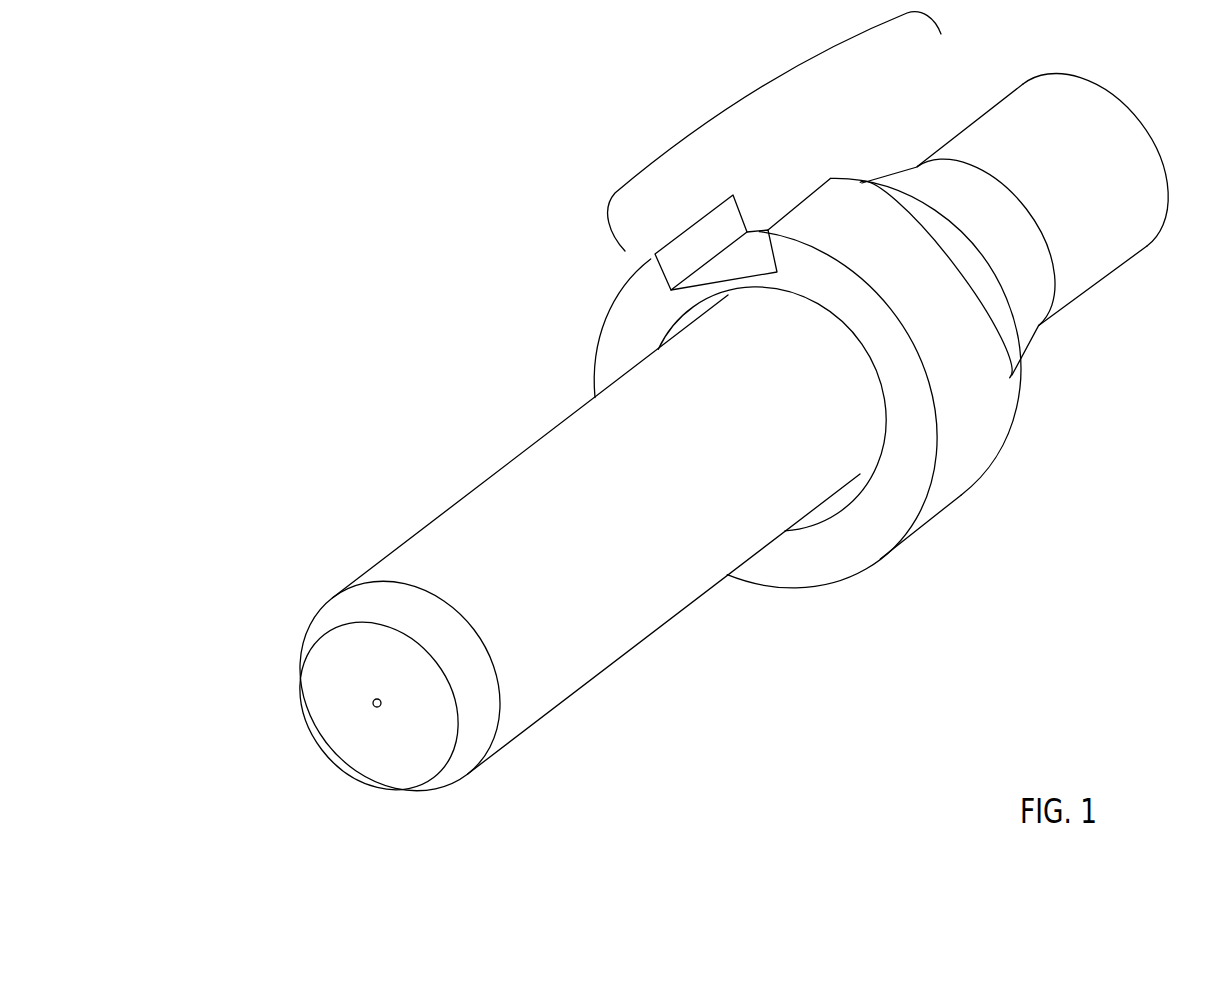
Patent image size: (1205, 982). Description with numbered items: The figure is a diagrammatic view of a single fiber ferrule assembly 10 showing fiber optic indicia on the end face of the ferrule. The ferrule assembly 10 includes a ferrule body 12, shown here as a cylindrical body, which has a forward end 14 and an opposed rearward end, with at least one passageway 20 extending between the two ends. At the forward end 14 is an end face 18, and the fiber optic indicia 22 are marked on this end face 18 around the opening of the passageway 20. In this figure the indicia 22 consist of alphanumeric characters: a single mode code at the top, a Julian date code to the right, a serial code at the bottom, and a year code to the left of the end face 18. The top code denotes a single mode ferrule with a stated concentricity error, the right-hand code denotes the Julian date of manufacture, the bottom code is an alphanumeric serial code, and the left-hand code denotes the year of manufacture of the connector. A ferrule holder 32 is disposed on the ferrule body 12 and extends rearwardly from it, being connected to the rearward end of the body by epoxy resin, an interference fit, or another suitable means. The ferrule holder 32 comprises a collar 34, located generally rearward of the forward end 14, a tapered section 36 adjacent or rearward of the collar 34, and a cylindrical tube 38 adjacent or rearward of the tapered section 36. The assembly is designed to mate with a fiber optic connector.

The ferrule assembly 10 is at (675, 464).
The ferrule body 12 is at (447, 512).
The forward end 14 is at (305, 628).
The end face 18 is at (335, 762).
The passageway 20 is at (372, 701).
The fiber optic indicia 22 is at (370, 645).
The ferrule holder 32 is at (717, 118).
The collar 34 is at (958, 512).
The tapered section 36 is at (1028, 345).
The cylindrical tube 38 is at (1133, 259).